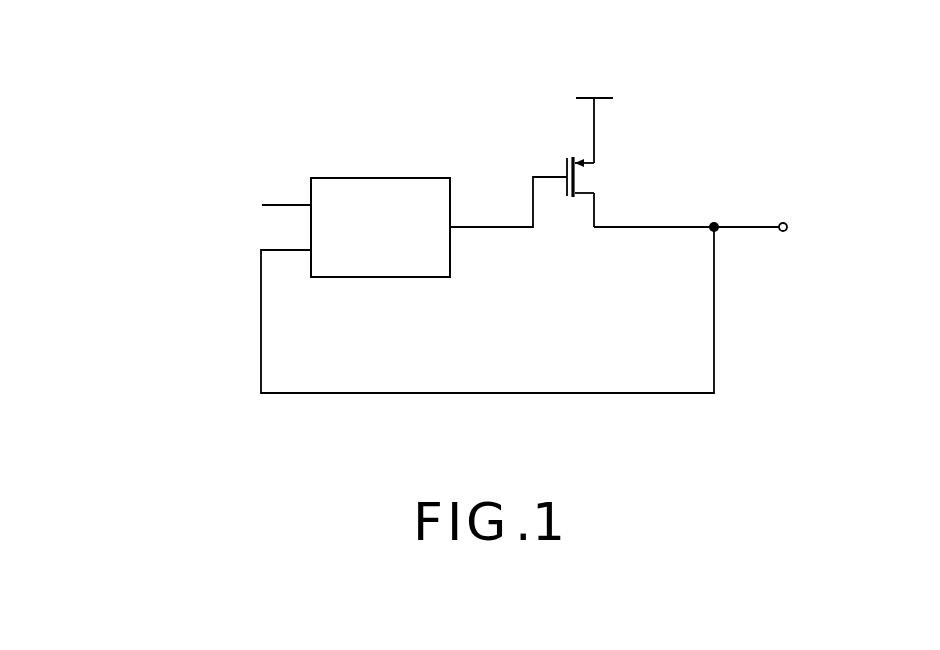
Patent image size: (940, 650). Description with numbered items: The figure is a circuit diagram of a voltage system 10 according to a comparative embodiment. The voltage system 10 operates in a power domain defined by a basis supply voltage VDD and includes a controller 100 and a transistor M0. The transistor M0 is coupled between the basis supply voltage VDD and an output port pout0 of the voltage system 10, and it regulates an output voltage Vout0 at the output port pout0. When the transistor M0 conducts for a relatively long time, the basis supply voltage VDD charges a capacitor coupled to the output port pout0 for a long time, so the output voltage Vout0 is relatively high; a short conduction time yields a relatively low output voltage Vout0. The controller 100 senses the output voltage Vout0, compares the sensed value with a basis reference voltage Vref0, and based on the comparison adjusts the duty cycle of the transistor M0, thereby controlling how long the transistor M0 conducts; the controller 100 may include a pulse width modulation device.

The voltage system 10 is at (65, 50).
The controller 100 is at (383, 178).
The basis reference voltage Vref0 is at (247, 203).
The basis supply voltage VDD is at (594, 110).
The transistor M0 is at (605, 192).
The output voltage Vout0 is at (686, 209).
The output port pout0 is at (787, 227).